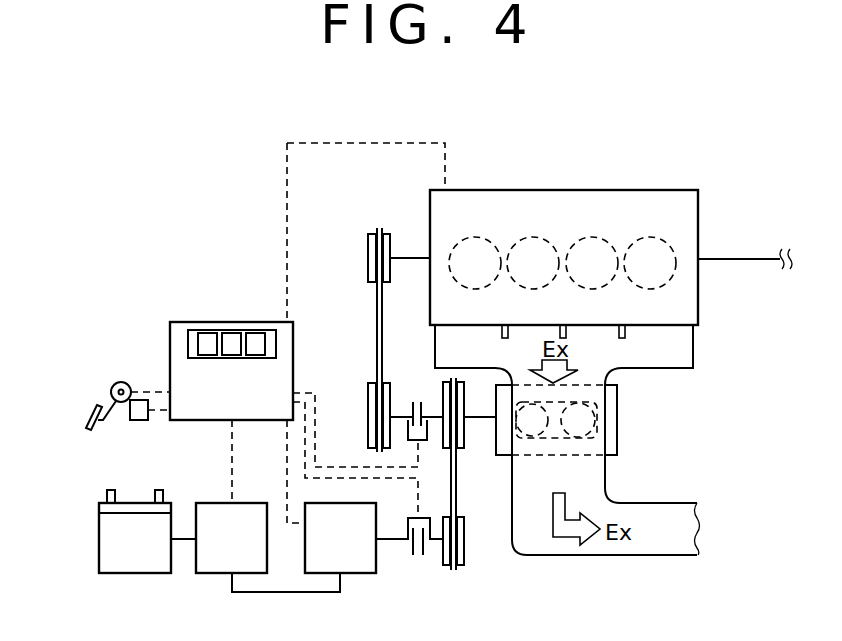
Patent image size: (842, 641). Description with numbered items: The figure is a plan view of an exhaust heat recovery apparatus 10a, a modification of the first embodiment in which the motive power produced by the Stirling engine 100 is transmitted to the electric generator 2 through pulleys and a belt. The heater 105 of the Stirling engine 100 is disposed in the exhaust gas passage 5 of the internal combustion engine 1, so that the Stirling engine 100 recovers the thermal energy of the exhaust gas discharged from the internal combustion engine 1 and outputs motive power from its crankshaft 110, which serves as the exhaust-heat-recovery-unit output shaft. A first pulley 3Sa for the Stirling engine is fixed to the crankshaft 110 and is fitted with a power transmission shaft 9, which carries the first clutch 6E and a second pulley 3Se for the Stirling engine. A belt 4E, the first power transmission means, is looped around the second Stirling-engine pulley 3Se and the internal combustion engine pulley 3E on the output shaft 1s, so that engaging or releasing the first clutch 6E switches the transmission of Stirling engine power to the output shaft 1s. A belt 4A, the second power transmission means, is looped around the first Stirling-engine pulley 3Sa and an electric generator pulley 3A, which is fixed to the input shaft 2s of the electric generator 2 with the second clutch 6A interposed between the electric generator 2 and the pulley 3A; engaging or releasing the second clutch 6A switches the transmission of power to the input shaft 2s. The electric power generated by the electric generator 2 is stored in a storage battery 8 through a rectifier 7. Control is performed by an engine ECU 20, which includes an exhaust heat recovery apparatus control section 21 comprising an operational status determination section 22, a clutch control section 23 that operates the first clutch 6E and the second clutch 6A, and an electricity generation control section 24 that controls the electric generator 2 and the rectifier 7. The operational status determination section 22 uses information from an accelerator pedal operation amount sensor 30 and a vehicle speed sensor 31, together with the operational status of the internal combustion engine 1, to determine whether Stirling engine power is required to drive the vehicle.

The internal combustion engine 1 is at (640, 200).
The output shaft 1s is at (407, 258).
The electric generator 2 is at (357, 573).
The input shaft 2s is at (410, 541).
The internal combustion engine pulley 3E is at (368, 238).
The belt 4E is at (379, 313).
The first clutch 6E is at (412, 401).
The second pulley for the Stirling engine 3Se is at (368, 410).
The first pulley for the Stirling engine 3Sa is at (440, 388).
The power transmission shaft 9 is at (402, 420).
The crankshaft 110 is at (481, 419).
The Stirling engine 100 is at (612, 408).
The heater 105 is at (607, 437).
The exhaust gas passage 5 is at (601, 485).
The exhaust heat recovery apparatus 10a is at (568, 557).
The belt 4A is at (460, 505).
The electric generator pulley 3A is at (465, 555).
The second clutch 6A is at (420, 557).
The rectifier 7 is at (217, 573).
The storage battery 8 is at (131, 573).
The engine ECU 20 is at (170, 353).
The exhaust heat recovery apparatus control section 21 is at (188, 342).
The operational status determination section 22 is at (210, 343).
The clutch control section 23 is at (230, 343).
The electricity generation control section 24 is at (255, 343).
The accelerator pedal operation amount sensor 30 is at (111, 386).
The vehicle speed sensor 31 is at (138, 420).